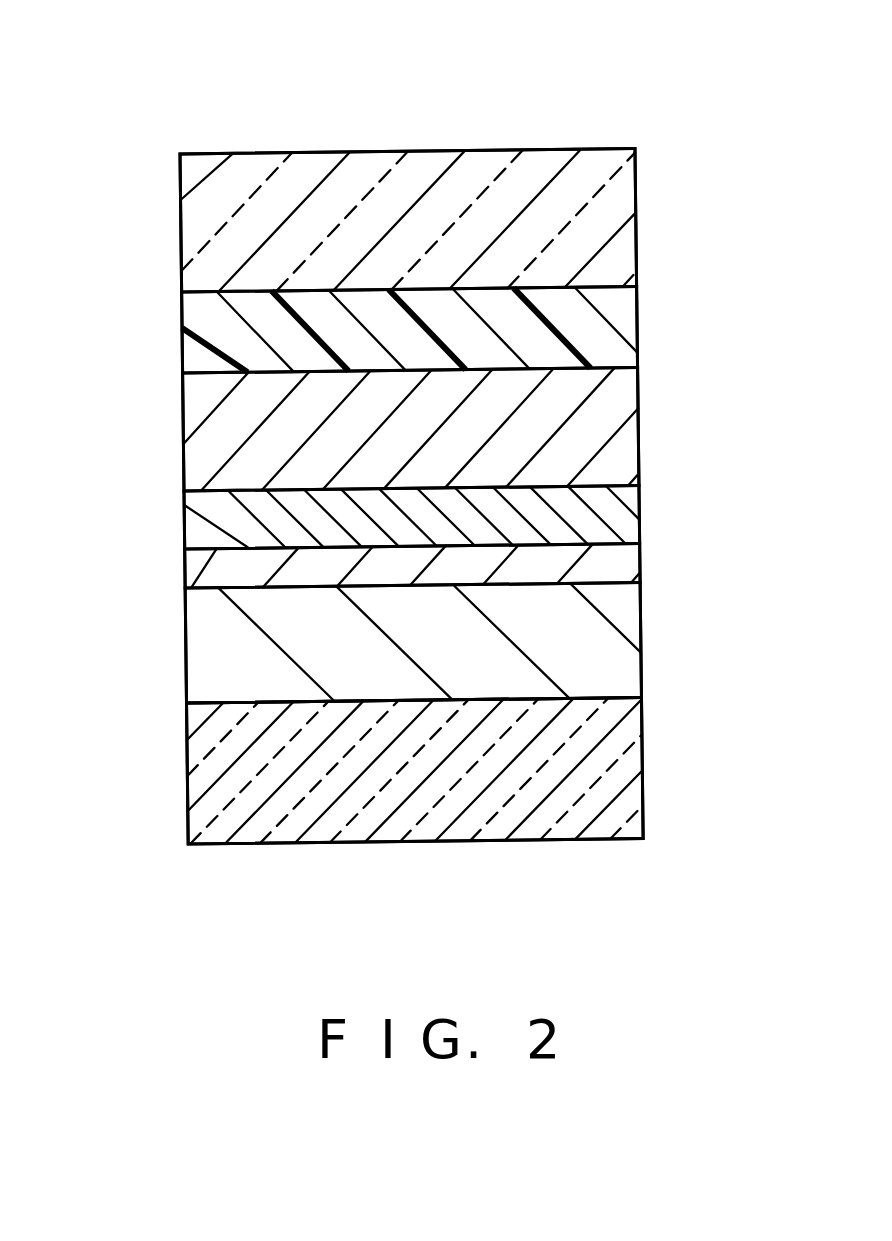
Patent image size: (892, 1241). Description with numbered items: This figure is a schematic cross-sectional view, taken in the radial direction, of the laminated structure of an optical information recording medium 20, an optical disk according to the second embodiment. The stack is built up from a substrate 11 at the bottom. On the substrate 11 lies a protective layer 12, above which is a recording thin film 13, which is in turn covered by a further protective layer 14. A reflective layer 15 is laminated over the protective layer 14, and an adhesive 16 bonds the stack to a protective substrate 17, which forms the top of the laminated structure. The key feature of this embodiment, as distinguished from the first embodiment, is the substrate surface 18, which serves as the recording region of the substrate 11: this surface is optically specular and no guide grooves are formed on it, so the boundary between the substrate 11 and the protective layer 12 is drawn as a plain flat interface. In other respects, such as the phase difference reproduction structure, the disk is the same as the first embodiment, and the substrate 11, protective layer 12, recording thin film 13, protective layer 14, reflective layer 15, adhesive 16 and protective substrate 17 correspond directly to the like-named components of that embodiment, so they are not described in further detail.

The optical information recording medium 20 is at (208, 130).
The substrate 11 is at (628, 765).
The protective layer 12 is at (628, 650).
The recording thin film 13 is at (626, 568).
The protective layer 14 is at (626, 525).
The reflective layer 15 is at (628, 440).
The adhesive 16 is at (625, 315).
The protective substrate 17 is at (622, 202).
The substrate surface 18 is at (270, 700).